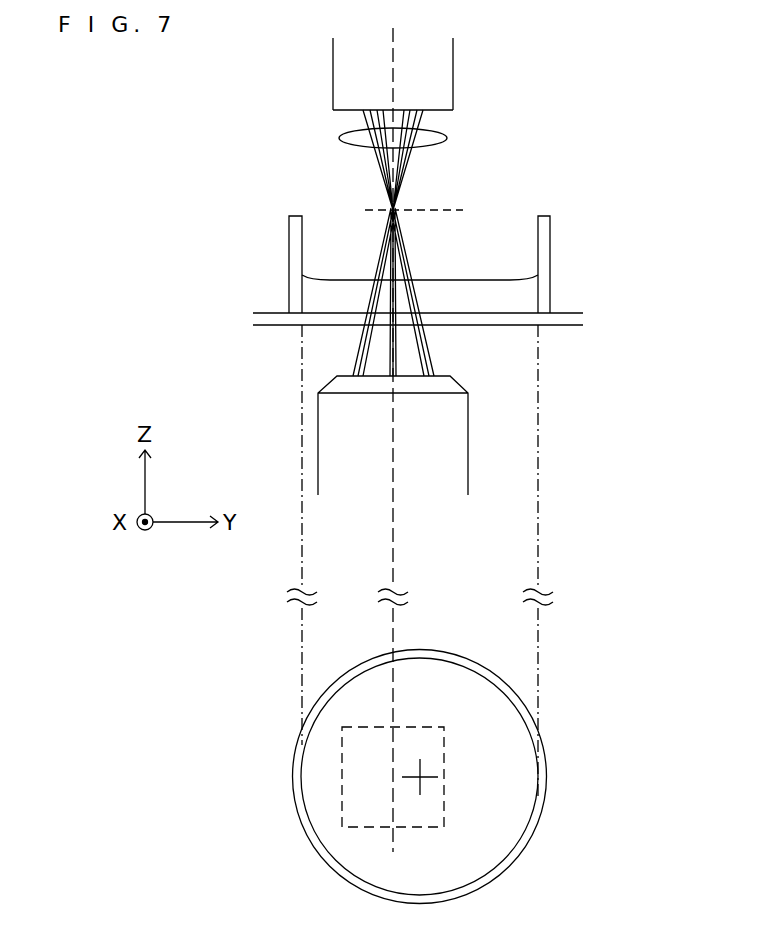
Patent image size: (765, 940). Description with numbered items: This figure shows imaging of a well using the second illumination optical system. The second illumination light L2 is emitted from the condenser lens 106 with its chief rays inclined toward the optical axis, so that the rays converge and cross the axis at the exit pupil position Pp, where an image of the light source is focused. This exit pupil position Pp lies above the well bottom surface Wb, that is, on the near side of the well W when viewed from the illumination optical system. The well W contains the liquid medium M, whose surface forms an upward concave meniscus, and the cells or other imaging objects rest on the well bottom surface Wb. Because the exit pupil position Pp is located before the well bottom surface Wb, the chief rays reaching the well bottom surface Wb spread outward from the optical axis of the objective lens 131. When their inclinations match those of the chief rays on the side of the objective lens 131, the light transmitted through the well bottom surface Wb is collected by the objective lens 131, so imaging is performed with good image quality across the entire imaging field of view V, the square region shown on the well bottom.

The condenser lens 106 is at (453, 52).
The second illumination light L2 is at (447, 136).
The exit pupil position Pp is at (431, 206).
The well W is at (538, 237).
The well bottom surface Wb is at (513, 313).
The medium M is at (350, 295).
The objective lens 131 is at (318, 425).
The imaging field of view V is at (343, 787).